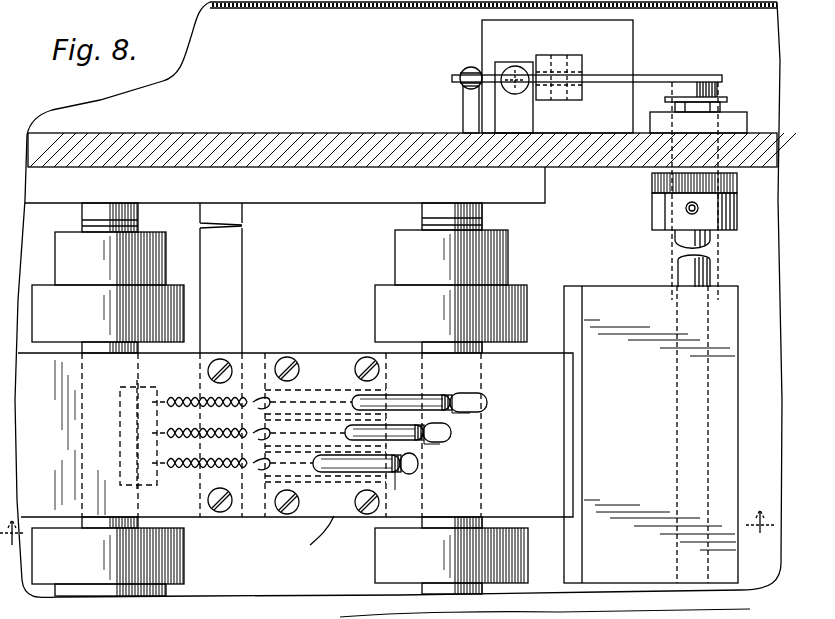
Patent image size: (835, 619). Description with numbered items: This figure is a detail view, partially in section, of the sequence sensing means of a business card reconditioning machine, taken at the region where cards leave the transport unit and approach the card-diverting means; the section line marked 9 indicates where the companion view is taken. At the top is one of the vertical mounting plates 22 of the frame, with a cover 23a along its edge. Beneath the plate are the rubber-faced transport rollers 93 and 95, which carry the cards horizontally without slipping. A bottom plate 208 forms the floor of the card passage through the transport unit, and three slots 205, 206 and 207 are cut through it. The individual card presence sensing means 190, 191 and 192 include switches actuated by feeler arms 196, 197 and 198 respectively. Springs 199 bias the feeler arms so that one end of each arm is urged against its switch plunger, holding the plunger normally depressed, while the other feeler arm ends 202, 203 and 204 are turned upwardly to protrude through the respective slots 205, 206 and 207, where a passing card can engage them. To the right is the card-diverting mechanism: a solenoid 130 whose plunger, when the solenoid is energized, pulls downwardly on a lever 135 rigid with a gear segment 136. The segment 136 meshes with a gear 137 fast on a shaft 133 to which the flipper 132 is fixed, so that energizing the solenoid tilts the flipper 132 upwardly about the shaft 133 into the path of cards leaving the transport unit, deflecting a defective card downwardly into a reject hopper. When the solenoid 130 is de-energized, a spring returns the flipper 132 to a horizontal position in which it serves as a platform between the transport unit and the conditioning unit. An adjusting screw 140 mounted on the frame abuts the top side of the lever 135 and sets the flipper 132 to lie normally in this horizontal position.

The vertical mounting plate 22 is at (312, 134).
The cover plate 23a is at (280, 9).
The roller 93 is at (41, 294).
The roller 95 is at (528, 302).
The solenoid 130 is at (620, 26).
The flipper 132 is at (600, 290).
The shaft 133 is at (677, 272).
The lever 135 is at (720, 75).
The gear segment 136 is at (660, 200).
The gear 137 is at (656, 183).
The adjusting screw 140 is at (514, 67).
The card presence sensing means 190 is at (414, 474).
The card presence sensing means 191 is at (432, 443).
The card presence sensing means 192 is at (452, 395).
The feeler arm 196 is at (320, 472).
The feeler arm 197 is at (345, 434).
The feeler arm 198 is at (352, 406).
The springs 199 is at (175, 458).
The feeler arm end 202 is at (395, 489).
The feeler arm end 203 is at (419, 440).
The feeler arm end 204 is at (452, 410).
The slot 205 is at (404, 466).
The slot 206 is at (451, 433).
The slot 207 is at (487, 398).
The bottom plate 208 is at (312, 541).
The section line 9 is at (387, 539).